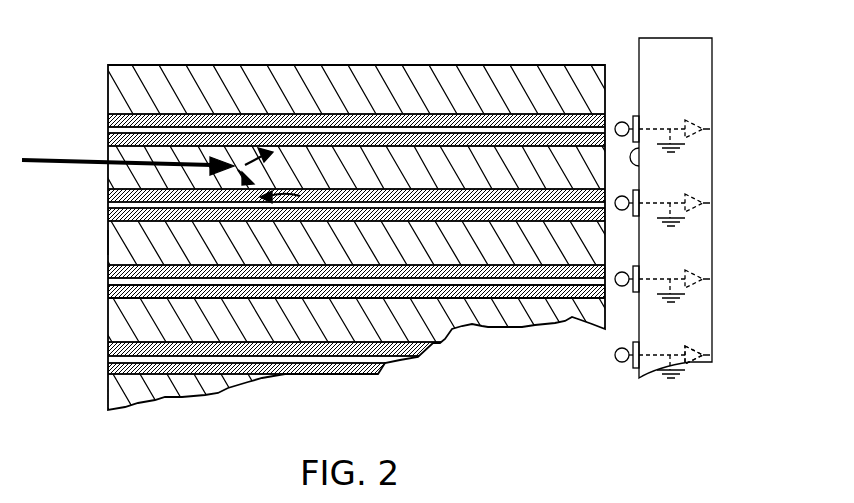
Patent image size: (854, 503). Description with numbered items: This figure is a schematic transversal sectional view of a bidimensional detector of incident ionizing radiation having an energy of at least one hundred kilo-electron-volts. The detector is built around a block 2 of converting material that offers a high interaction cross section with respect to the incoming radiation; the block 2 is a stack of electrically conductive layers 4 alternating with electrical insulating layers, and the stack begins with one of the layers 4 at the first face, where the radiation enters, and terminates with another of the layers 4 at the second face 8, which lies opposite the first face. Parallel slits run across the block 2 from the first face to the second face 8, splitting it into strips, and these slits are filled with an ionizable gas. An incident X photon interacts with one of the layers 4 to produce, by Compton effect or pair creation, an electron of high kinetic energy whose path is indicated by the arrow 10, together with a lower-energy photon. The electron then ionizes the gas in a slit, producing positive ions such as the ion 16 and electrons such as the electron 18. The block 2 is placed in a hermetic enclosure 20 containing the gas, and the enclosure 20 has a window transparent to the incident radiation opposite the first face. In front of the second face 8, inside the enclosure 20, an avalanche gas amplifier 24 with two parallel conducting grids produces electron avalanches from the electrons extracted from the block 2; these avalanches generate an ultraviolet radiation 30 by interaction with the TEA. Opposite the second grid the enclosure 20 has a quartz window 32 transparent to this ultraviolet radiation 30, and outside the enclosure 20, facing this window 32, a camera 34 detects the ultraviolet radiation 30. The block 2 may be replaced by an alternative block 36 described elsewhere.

The block 2 is at (337, 214).
The layers 4 is at (372, 172).
The second face 8 is at (104, 242).
The arrow 10 is at (615, 323).
The ion 16 is at (83, 161).
The electron 18 is at (238, 172).
The hermetic enclosure 20 is at (245, 162).
The avalanche gas amplifier 24 is at (290, 196).
The ultraviolet radiation 30 is at (697, 77).
The window 32 is at (607, 116).
The camera 34 is at (640, 193).
The block 36 is at (616, 364).